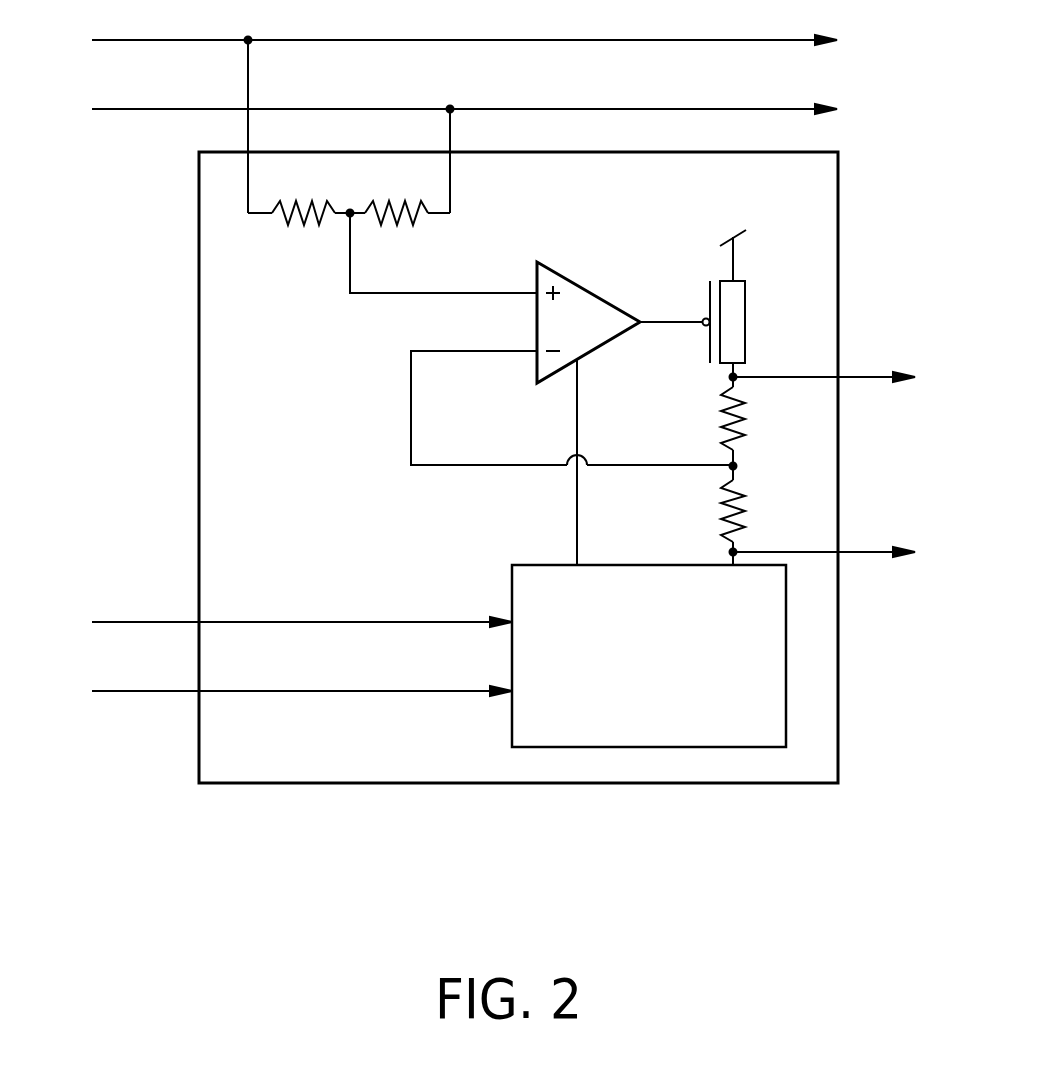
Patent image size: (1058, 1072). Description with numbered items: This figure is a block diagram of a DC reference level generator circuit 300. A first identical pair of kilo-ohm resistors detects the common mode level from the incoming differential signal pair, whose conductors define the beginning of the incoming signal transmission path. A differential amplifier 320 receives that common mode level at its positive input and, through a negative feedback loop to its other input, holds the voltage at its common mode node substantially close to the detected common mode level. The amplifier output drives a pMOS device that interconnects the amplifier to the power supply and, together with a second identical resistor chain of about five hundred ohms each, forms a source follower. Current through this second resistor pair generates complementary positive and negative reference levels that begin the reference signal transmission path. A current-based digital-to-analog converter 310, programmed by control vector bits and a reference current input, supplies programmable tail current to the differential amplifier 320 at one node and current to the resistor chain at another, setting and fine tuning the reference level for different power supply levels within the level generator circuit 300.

The level generator circuit 300 is at (922, 869).
The IDAC-1 (current-based digital-to-analog converter) 310 is at (753, 727).
The differential amplifier 320 is at (590, 337).